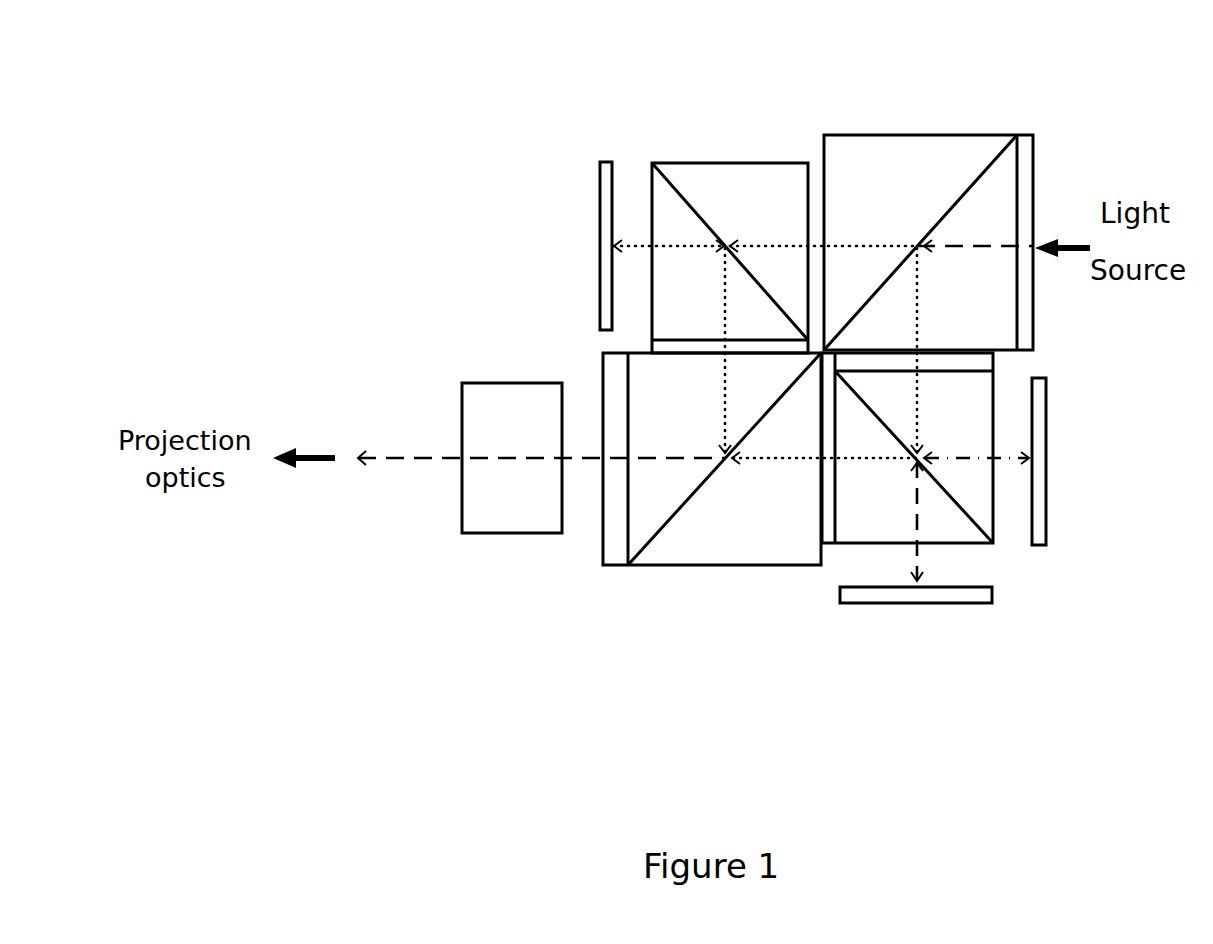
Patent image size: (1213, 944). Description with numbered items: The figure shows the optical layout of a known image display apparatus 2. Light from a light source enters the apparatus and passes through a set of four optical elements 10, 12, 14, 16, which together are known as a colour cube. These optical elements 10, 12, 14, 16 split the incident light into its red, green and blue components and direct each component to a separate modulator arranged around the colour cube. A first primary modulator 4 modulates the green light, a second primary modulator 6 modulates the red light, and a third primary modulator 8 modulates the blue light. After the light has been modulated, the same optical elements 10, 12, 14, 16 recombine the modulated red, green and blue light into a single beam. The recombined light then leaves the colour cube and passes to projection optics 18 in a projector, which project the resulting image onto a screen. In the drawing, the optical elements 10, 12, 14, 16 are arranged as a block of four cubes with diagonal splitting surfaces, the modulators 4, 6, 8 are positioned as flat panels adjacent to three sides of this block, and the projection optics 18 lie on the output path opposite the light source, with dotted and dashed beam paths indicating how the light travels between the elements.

The image display apparatus 2 is at (422, 176).
The first primary modulator 4 is at (598, 204).
The second primary modulator 6 is at (858, 603).
The third primary modulator 8 is at (1048, 515).
The optical element 10 is at (1003, 150).
The optical element 12 is at (976, 535).
The optical element 14 is at (680, 183).
The optical element 16 is at (660, 532).
The projection optics 18 is at (488, 533).